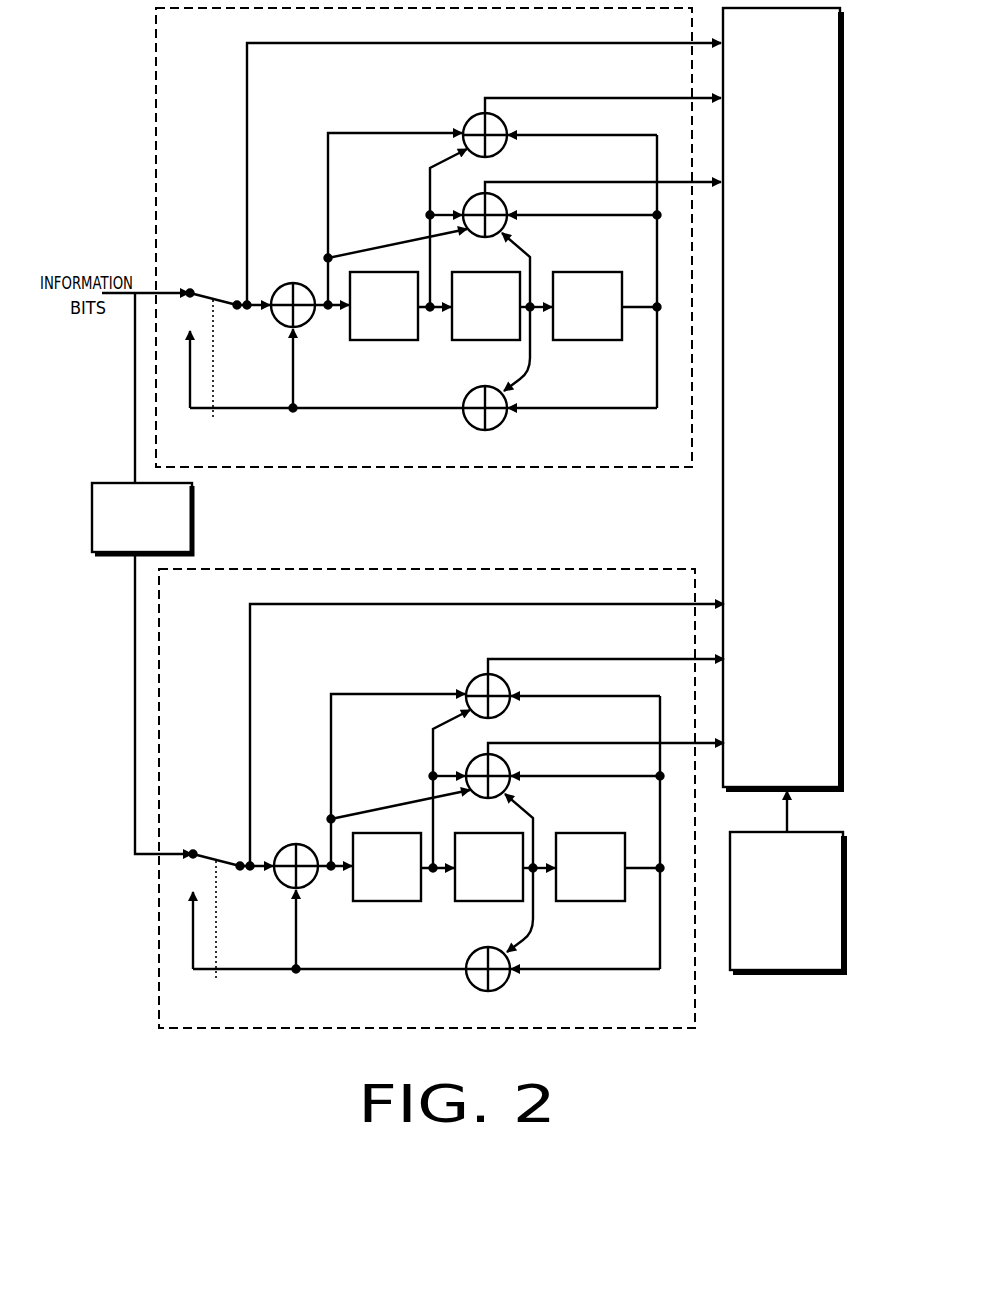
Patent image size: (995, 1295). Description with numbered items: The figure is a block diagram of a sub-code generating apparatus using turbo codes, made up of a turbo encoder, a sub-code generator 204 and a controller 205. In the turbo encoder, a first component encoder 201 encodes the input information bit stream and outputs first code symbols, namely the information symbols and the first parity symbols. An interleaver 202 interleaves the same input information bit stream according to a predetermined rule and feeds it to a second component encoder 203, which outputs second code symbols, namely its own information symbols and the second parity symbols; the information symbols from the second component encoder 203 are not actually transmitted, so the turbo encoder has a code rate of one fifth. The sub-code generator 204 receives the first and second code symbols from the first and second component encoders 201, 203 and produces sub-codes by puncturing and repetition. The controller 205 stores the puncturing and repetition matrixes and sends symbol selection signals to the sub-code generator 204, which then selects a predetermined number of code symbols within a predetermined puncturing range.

The first component encoder 201 is at (156, 100).
The interleaver 202 is at (194, 516).
The second component encoder 203 is at (521, 570).
The sub-code generator 204 is at (723, 513).
The controller 205 is at (768, 974).